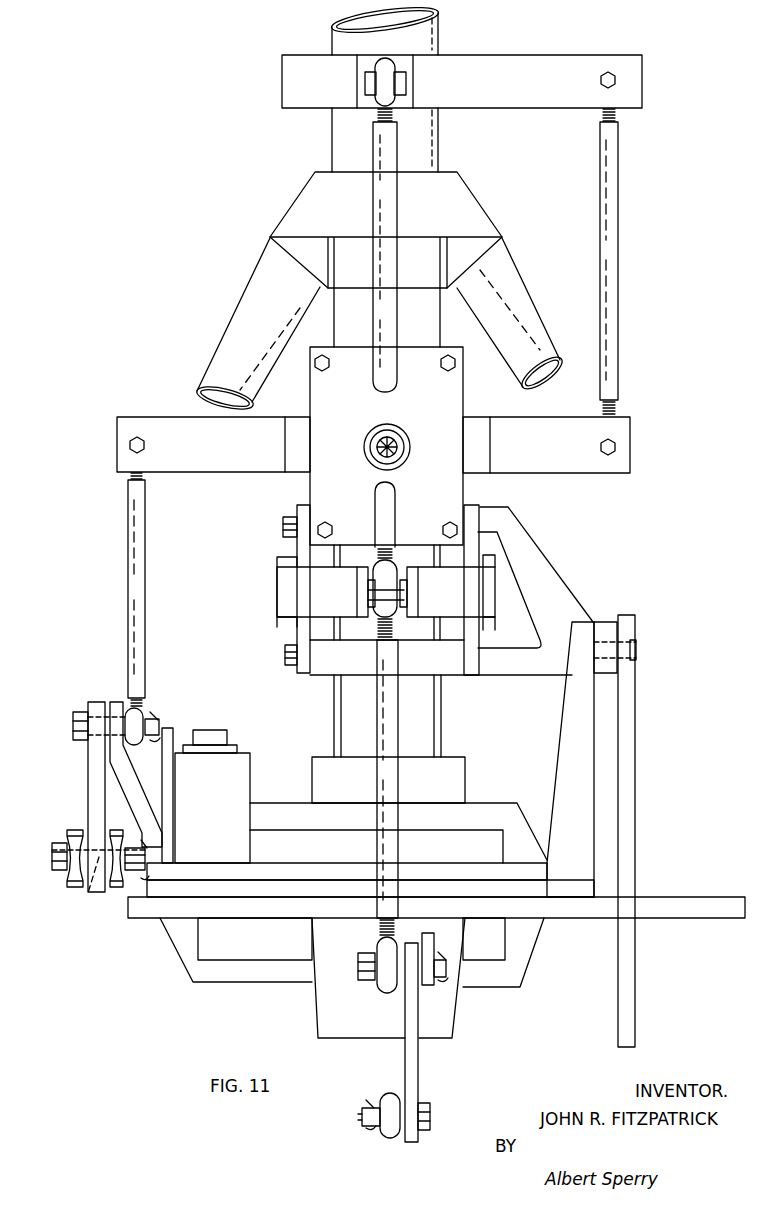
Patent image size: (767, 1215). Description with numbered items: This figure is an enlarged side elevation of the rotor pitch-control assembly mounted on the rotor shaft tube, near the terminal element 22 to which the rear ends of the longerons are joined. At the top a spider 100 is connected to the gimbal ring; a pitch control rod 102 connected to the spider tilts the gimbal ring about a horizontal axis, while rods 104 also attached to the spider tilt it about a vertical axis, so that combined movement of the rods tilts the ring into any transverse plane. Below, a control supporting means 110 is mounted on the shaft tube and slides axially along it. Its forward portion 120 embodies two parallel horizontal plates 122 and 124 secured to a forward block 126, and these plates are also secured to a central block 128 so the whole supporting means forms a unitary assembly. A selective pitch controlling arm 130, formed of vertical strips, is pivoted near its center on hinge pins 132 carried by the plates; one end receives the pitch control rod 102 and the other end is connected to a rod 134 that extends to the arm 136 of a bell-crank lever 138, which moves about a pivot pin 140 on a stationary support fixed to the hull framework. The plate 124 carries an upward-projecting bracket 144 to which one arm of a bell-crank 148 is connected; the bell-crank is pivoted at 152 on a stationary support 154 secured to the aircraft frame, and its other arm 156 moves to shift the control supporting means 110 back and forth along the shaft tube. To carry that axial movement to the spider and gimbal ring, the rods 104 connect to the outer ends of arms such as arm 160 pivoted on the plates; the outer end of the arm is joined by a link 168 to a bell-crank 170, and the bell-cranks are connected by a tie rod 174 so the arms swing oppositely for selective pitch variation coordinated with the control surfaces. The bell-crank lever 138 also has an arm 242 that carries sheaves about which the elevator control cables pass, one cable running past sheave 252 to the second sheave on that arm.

The terminal element 22 is at (316, 200).
The spider 100 is at (522, 97).
The pitch control rod 102 is at (600, 244).
The rods 104 is at (383, 218).
The control supporting means 110 is at (452, 486).
The forward portion 120 is at (302, 547).
The horizontal plate 122 is at (305, 626).
The horizontal plate 124 is at (478, 635).
The forward block 126 is at (330, 668).
The central block 128 is at (345, 468).
The selective pitch controlling arm 130 is at (162, 468).
The hinge pins 132 is at (403, 441).
The rod 134 is at (135, 567).
The arm 136 is at (118, 778).
The bell-crank lever 138 is at (150, 812).
The pivot pin 140 is at (88, 895).
The bracket 144 is at (545, 572).
The bell-crank 148 is at (640, 744).
The pivot 152 is at (625, 648).
The stationary support 154 is at (570, 776).
The arm 156 is at (632, 795).
The arm 160 is at (420, 594).
The link 168 is at (388, 772).
The bell-crank 170 is at (410, 992).
The tie rod 174 is at (390, 1137).
The arm 242 is at (68, 845).
The sheave 252 is at (118, 888).